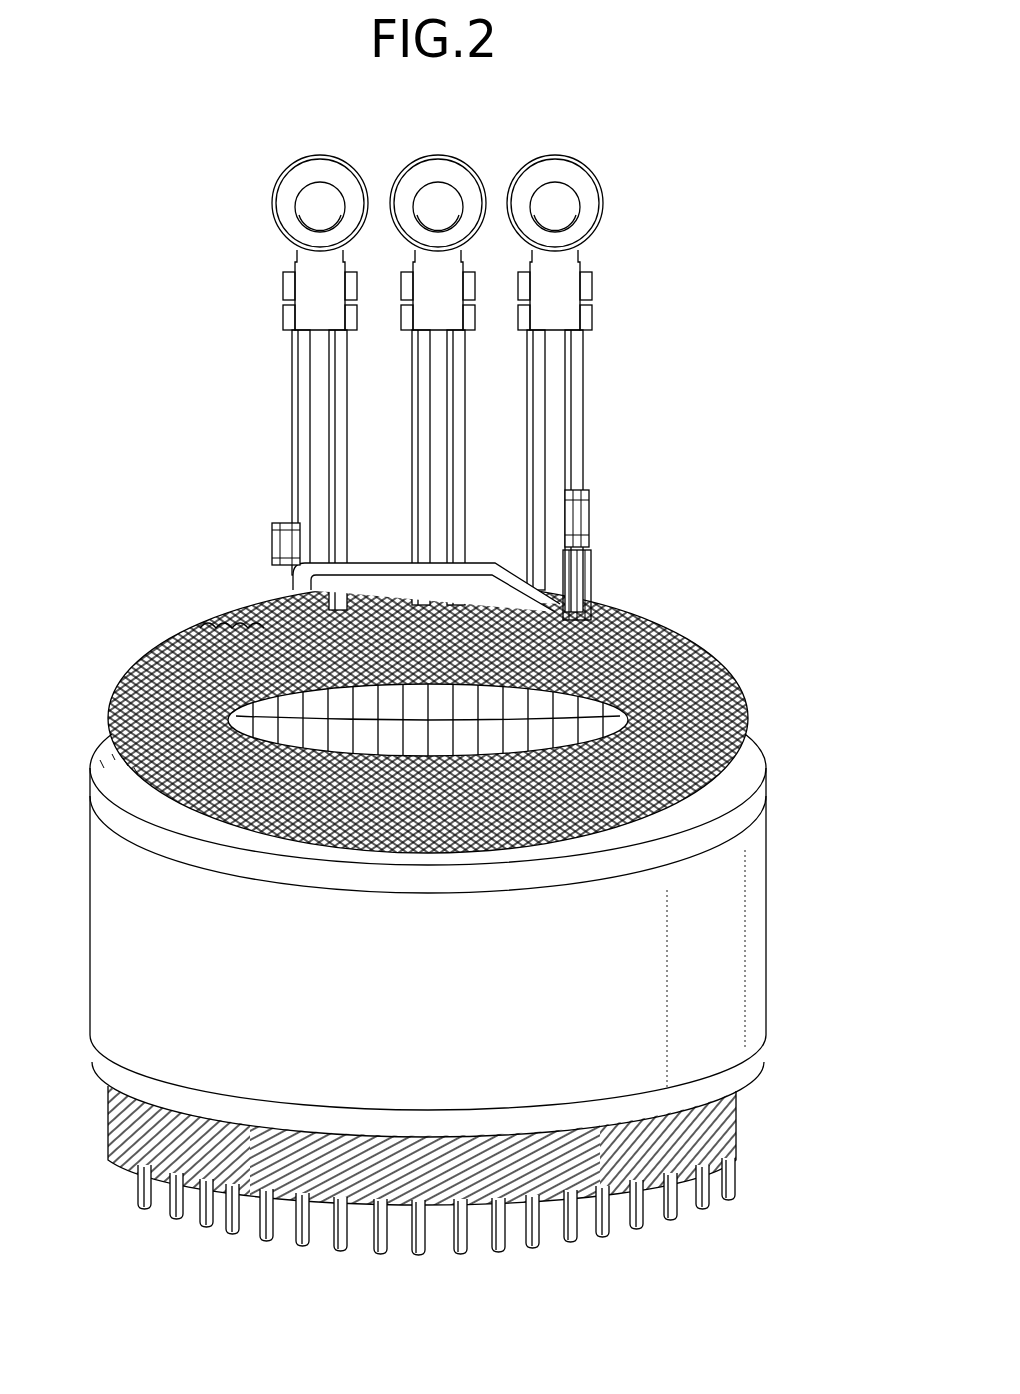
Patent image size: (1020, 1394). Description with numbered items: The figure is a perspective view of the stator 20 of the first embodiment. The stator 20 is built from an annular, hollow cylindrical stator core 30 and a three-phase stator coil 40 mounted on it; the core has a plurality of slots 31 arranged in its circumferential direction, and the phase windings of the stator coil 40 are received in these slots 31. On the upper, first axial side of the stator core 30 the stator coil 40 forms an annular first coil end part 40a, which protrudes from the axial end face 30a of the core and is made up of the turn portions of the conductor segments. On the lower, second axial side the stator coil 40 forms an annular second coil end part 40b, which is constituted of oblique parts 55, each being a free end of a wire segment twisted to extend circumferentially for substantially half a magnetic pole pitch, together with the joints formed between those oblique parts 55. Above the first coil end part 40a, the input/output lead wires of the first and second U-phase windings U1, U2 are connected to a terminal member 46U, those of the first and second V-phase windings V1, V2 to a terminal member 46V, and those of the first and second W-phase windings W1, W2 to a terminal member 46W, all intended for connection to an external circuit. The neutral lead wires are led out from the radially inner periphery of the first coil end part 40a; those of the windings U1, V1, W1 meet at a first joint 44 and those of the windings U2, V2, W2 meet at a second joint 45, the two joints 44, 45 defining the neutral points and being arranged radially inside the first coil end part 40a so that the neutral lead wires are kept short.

The stator 20 is at (707, 455).
The stator core 30 is at (769, 905).
The axial end face 30a is at (763, 768).
The slots 31 is at (222, 607).
The stator coil 40 is at (678, 625).
The first coil end part 40a is at (738, 693).
The second coil end part 40b is at (742, 1108).
The first joint 44 is at (592, 508).
The second joint 45 is at (268, 535).
The terminal member 46U is at (555, 152).
The terminal member 46V is at (438, 152).
The terminal member 46W is at (320, 152).
The first U-phase winding U1 is at (583, 367).
The second U-phase winding U2 is at (527, 367).
The first V-phase winding V1 is at (465, 438).
The second V-phase winding V2 is at (412, 438).
The first W-phase winding W1 is at (348, 363).
The second W-phase winding W2 is at (292, 363).
The oblique part 55 is at (405, 1203).